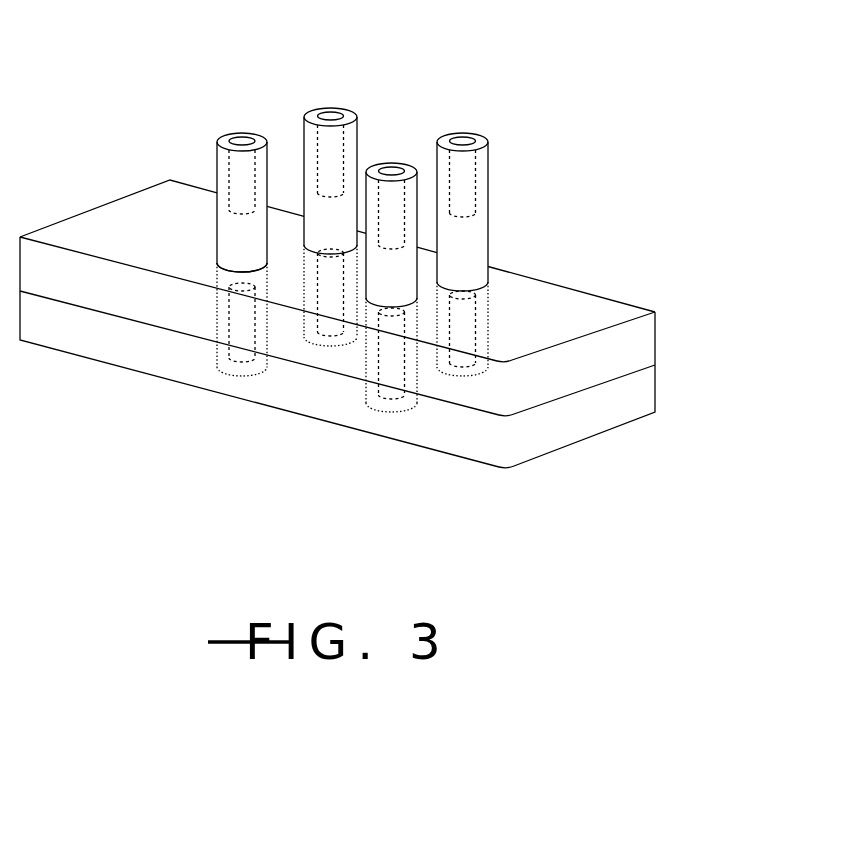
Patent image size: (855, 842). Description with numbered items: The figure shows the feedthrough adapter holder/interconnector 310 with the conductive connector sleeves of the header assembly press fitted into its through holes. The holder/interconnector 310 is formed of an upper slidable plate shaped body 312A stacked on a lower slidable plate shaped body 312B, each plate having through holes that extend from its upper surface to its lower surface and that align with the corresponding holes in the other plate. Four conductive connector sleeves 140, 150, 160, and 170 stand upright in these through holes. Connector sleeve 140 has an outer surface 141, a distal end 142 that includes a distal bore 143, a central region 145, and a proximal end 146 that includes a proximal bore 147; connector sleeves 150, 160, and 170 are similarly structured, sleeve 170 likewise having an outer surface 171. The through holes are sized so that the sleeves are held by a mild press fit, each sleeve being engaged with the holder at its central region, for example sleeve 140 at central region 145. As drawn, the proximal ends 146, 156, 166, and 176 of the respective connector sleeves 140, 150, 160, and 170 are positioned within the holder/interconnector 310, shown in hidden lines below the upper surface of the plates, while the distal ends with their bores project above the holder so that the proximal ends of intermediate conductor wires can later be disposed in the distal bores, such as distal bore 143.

The feedthrough adapter holder/interconnector 310 is at (396, 324).
The upper slidable plate shaped body 312A is at (655, 338).
The lower slidable plate shaped body 312B is at (655, 390).
The connector sleeve 140 is at (163, 214).
The outer surface 141 is at (218, 200).
The distal end 142 is at (218, 157).
The distal bore 143 is at (242, 133).
The central region 145 is at (217, 263).
The proximal end 146 is at (212, 367).
The proximal bore 147 is at (217, 310).
The connector sleeve 150 is at (460, 278).
The proximal end 156 is at (420, 383).
The connector sleeve 160 is at (279, 252).
The proximal end 166 is at (315, 343).
The connector sleeve 170 is at (550, 304).
The outer surface 171 is at (477, 188).
The proximal end 176 is at (483, 367).